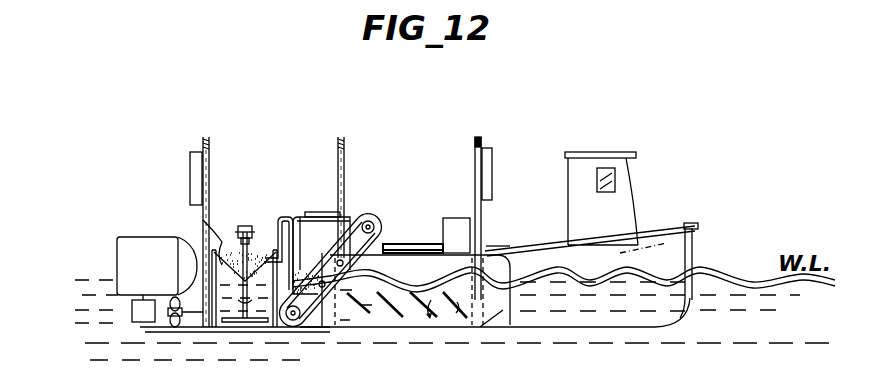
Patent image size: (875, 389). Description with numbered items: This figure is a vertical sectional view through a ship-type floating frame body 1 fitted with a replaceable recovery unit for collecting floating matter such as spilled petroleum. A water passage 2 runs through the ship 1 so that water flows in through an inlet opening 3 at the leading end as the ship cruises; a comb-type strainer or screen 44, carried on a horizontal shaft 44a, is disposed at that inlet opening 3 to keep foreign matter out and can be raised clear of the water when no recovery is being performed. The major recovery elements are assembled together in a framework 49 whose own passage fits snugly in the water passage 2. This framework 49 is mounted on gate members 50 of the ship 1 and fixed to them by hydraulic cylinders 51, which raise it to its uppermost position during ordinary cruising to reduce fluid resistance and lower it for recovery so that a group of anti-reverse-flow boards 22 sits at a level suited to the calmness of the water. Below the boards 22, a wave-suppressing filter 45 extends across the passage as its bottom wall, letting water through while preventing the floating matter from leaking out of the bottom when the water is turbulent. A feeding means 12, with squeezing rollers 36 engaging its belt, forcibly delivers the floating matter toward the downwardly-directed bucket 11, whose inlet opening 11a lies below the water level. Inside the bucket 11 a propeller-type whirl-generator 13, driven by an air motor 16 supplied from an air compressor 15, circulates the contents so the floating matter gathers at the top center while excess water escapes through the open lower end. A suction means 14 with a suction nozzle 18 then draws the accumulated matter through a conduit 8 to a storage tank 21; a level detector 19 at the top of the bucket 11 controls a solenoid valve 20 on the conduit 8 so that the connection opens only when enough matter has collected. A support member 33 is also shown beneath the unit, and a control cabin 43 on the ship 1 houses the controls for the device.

The floating frame body 1 is at (110, 234).
The water passage 2 is at (608, 317).
The inlet opening 3 is at (687, 290).
The conduit 8 is at (313, 210).
The downwardly-directed bucket 11 is at (192, 330).
The inlet opening 11a is at (225, 330).
The feeding means 12 is at (372, 247).
The whirl-generator 13 is at (265, 330).
The suction means 14 is at (298, 212).
The air compressor 15 is at (486, 216).
The air motor 16 is at (243, 226).
The suction nozzle 18 is at (222, 237).
The level detector 19 is at (203, 220).
The solenoid valve 20 is at (268, 228).
The storage tank 21 is at (322, 220).
The anti-reverse-flow boards 22 is at (465, 330).
The support 33 is at (323, 327).
The squeezing rollers 36 is at (288, 322).
The control cabin 43 is at (585, 168).
The strainer or screen 44 is at (693, 257).
The horizontal shaft 44a is at (698, 226).
The wave-suppressing filter 45 is at (418, 328).
The framework 49 is at (417, 265).
The gate members 50 is at (477, 135).
The hydraulic cylinders 51 is at (485, 162).